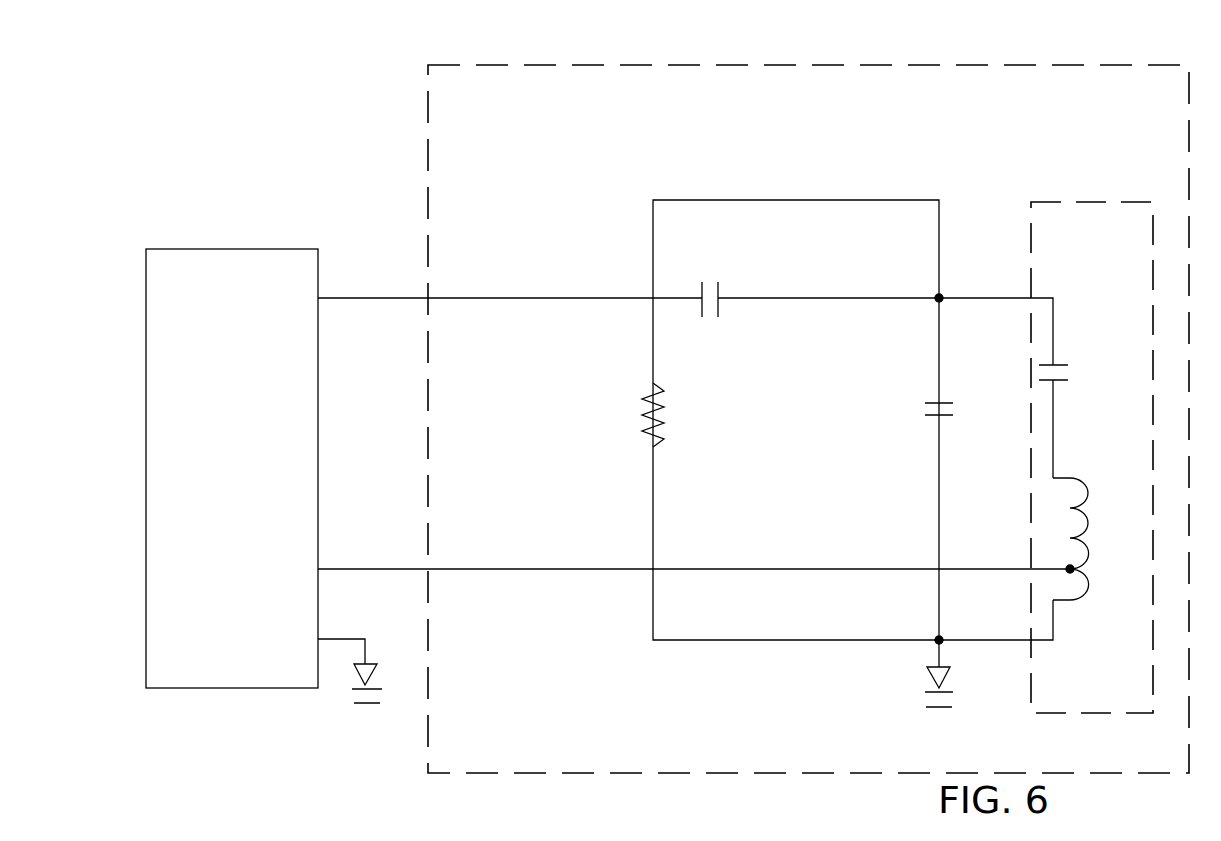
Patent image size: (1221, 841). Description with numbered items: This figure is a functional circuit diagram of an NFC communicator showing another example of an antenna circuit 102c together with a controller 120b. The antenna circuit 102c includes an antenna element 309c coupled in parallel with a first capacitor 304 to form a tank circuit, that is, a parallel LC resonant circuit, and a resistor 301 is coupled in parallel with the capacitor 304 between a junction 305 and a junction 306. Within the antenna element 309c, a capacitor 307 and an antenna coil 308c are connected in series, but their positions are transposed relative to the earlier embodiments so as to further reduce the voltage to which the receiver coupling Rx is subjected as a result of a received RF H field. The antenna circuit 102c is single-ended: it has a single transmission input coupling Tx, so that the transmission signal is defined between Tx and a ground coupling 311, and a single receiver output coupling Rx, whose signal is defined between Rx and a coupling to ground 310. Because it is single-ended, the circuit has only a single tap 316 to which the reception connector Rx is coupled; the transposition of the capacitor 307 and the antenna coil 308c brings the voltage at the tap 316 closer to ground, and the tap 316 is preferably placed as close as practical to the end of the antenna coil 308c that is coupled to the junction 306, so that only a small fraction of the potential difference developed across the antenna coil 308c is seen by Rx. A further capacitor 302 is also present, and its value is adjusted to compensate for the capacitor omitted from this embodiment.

The antenna circuit 102c is at (812, 65).
The controller 120b is at (233, 249).
The resistor 301 is at (666, 395).
The capacitor 302 is at (710, 283).
The first capacitor 304 is at (955, 403).
The junction 305 is at (950, 297).
The junction 306 is at (935, 650).
The capacitor 307 is at (1072, 363).
The antenna coil 308c is at (1083, 603).
The antenna element 309c is at (1062, 725).
The coupling to ground 310 is at (940, 694).
The ground coupling 311 is at (352, 688).
The tap 316 is at (1083, 568).